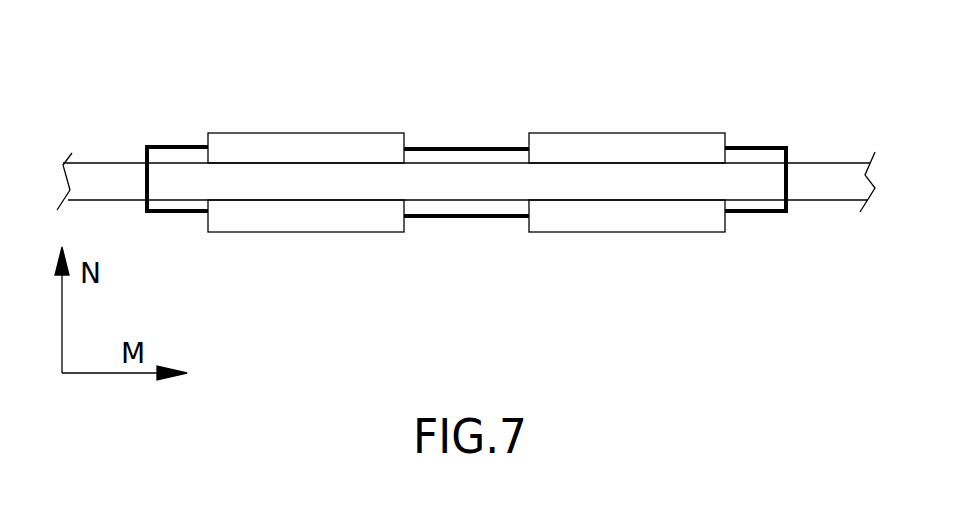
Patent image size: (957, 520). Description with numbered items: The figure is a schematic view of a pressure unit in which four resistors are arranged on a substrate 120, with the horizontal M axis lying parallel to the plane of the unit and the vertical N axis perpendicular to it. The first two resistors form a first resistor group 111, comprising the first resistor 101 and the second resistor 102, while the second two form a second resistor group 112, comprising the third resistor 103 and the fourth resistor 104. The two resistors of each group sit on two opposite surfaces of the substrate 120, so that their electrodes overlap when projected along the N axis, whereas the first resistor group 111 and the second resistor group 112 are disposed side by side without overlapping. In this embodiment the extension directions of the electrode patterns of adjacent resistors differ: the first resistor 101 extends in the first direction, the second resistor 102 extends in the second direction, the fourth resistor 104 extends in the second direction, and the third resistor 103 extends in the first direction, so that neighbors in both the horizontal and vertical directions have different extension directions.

The substrate 120 is at (97, 175).
The first resistor group 111 is at (364, 55).
The second resistor group 112 is at (687, 55).
The first resistor 101 is at (265, 140).
The second resistor 102 is at (343, 218).
The third resistor 103 is at (667, 218).
The fourth resistor 104 is at (588, 140).